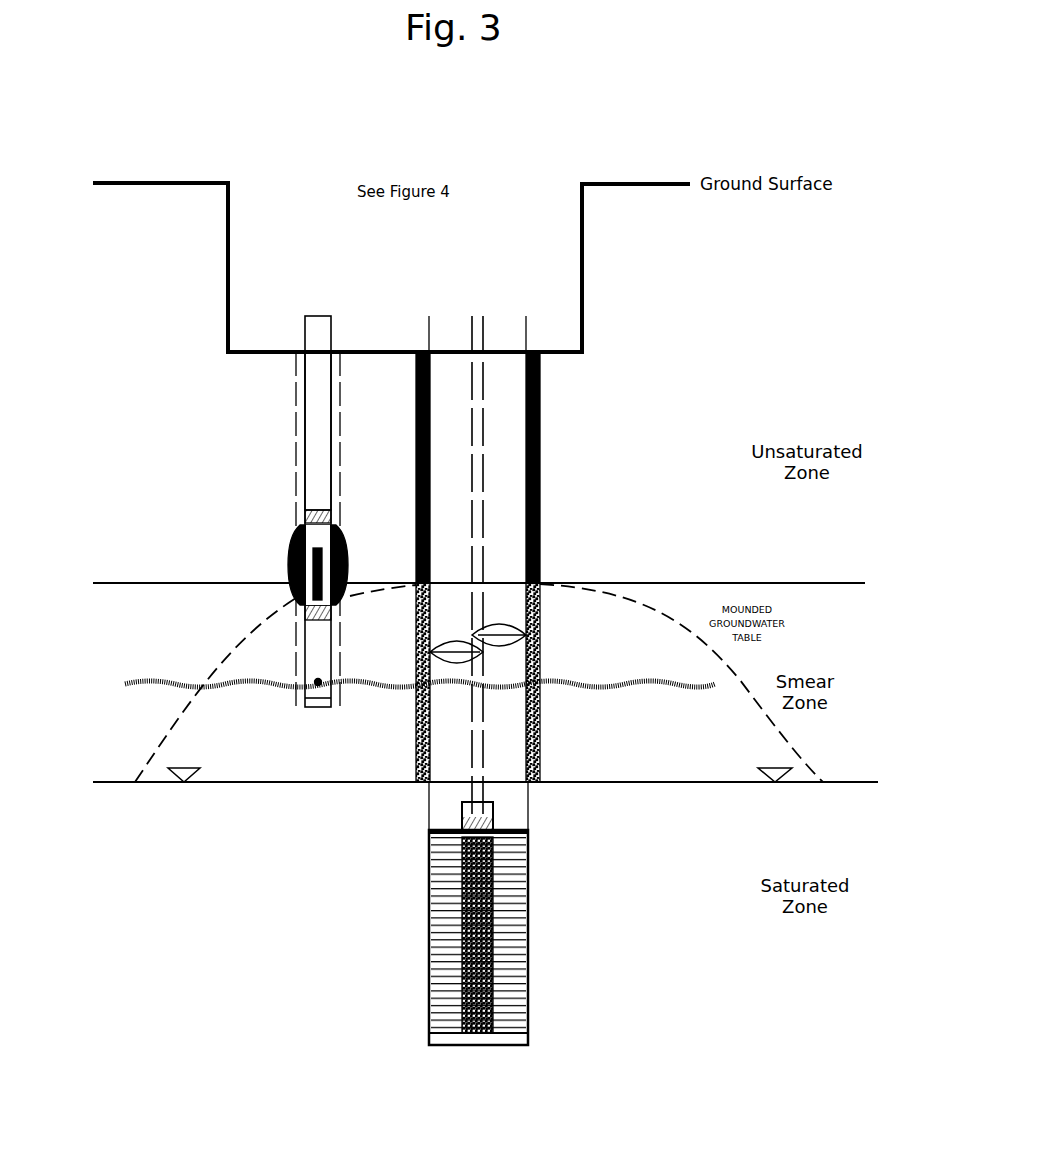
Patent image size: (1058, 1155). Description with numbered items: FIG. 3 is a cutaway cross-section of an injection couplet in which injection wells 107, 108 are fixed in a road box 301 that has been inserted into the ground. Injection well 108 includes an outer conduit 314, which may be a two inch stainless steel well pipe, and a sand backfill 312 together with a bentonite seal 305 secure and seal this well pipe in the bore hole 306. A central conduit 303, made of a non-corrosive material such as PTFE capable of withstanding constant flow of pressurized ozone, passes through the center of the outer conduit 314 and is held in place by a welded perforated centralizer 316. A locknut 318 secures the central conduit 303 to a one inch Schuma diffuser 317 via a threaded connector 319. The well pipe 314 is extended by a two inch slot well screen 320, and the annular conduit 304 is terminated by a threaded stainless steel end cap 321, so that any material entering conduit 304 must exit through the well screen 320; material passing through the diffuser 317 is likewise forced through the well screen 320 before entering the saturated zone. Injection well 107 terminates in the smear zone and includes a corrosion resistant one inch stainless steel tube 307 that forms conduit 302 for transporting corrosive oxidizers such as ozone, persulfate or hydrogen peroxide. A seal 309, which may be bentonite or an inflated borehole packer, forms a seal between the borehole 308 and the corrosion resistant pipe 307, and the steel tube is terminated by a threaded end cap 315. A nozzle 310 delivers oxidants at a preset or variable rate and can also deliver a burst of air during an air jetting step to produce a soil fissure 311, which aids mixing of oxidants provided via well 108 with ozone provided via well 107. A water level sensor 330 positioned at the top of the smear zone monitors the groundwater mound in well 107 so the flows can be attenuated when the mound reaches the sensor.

The injection well 107 is at (262, 432).
The injection well 108 is at (550, 397).
The road box 301 is at (200, 183).
The conduit 302 is at (319, 316).
The central conduit 303 is at (477, 316).
The annular conduit 304 is at (452, 330).
The bentonite seal 305 is at (540, 432).
The bore hole 306 is at (540, 573).
The stainless steel tube 307 is at (318, 412).
The borehole 308 is at (298, 483).
The seal 309 is at (290, 560).
The nozzle 310 is at (315, 679).
The soil fissure 311 is at (233, 687).
The sand backfill 312 is at (538, 650).
The outer conduit 314 is at (540, 745).
The threaded end cap 315 is at (320, 702).
The welded perforated centralizer 316 is at (528, 828).
The Schuma diffuser 317 is at (493, 888).
The locknut 318 is at (460, 805).
The threaded connector 319 is at (462, 843).
The slot well screen 320 is at (507, 960).
The threaded stainless steel end cap 321 is at (507, 1042).
The water level sensor 330 is at (290, 545).